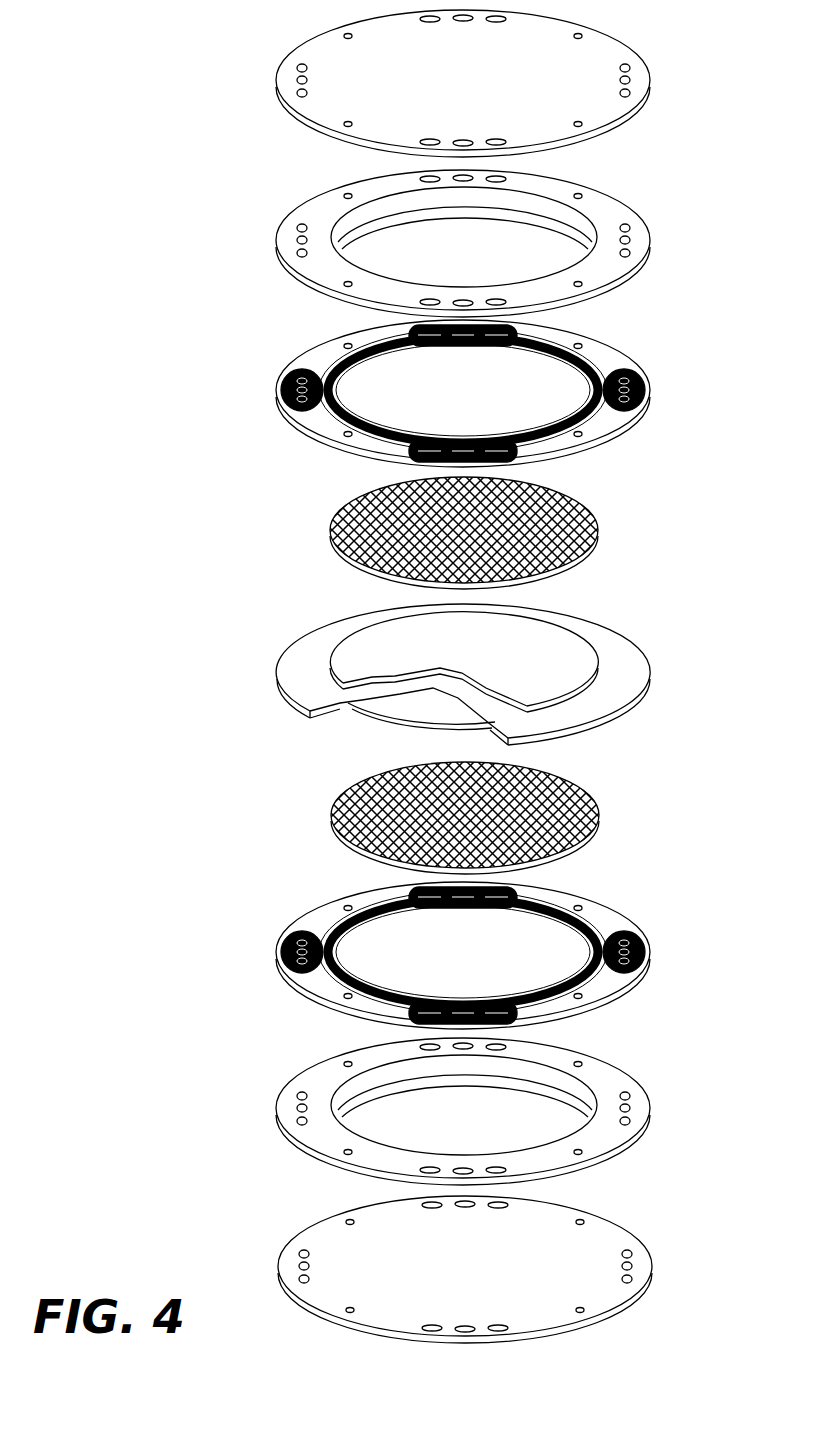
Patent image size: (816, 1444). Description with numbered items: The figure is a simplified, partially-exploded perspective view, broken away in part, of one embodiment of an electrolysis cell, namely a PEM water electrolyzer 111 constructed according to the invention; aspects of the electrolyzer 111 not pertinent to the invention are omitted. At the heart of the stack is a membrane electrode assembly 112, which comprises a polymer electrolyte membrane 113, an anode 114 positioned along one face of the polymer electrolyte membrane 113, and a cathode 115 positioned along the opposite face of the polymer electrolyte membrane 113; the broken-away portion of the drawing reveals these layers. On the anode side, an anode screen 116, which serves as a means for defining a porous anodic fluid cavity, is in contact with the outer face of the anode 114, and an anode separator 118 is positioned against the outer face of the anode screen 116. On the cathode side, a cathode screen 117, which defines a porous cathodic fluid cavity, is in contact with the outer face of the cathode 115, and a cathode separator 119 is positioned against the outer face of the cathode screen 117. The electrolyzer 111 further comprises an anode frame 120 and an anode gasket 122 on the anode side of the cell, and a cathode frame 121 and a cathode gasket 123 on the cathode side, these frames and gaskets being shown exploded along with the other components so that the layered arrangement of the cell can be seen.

The PEM water electrolyzer 111 is at (262, 14).
The membrane electrode assembly 112 is at (516, 674).
The polymer electrolyte membrane 113 is at (613, 652).
The anode 114 is at (535, 648).
The cathode 115 is at (395, 725).
The anode screen 116 is at (585, 502).
The cathode screen 117 is at (572, 795).
The anode separator 118 is at (588, 60).
The cathode separator 119 is at (587, 1255).
The anode frame 120 is at (600, 353).
The cathode frame 121 is at (607, 918).
The anode gasket 122 is at (600, 203).
The cathode gasket 123 is at (592, 1077).